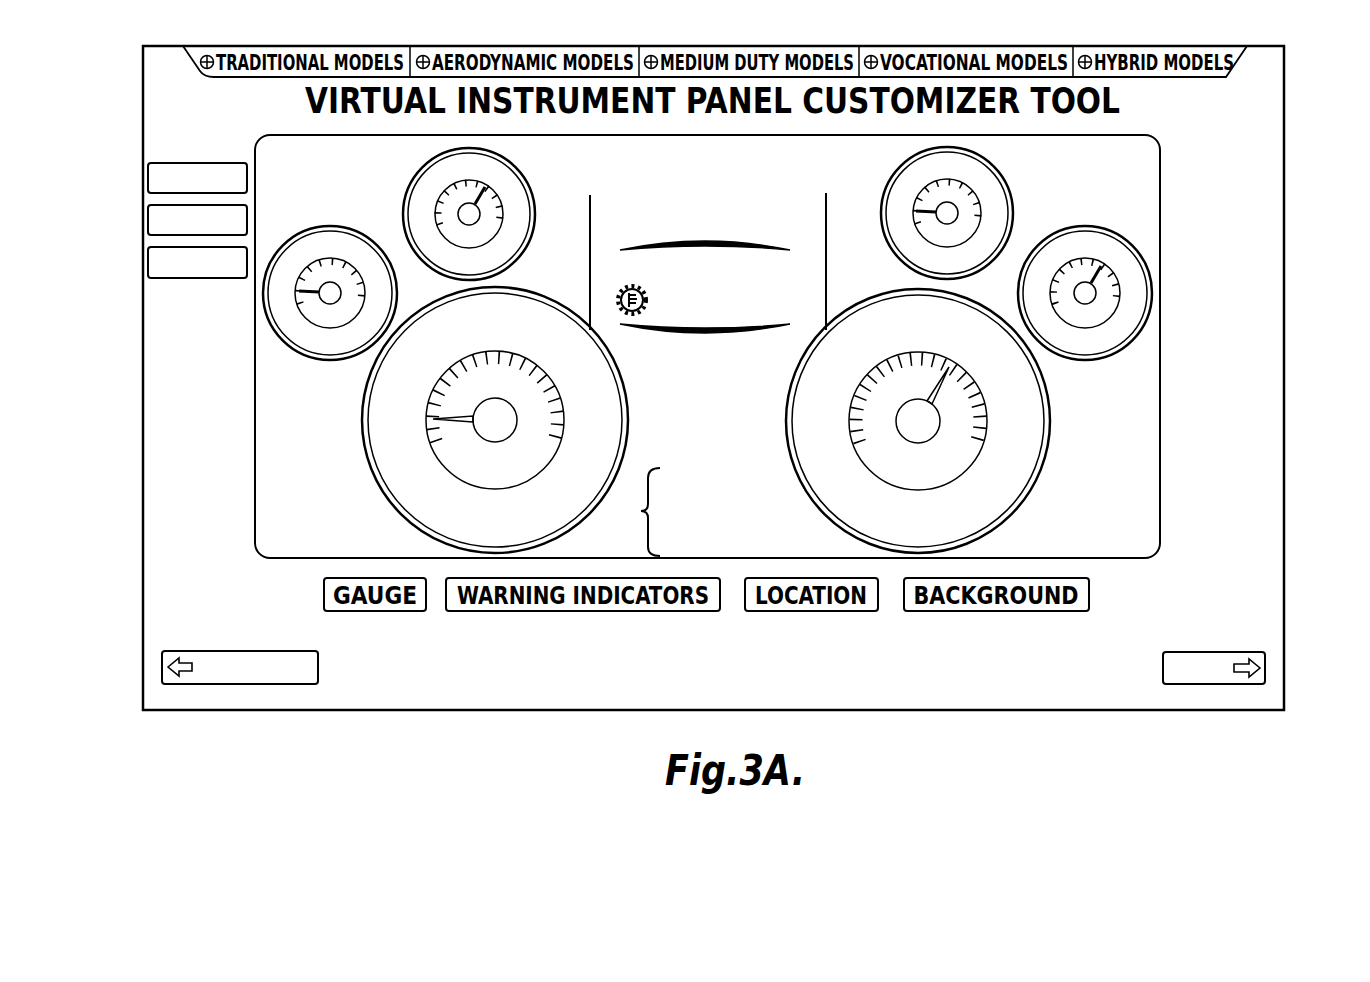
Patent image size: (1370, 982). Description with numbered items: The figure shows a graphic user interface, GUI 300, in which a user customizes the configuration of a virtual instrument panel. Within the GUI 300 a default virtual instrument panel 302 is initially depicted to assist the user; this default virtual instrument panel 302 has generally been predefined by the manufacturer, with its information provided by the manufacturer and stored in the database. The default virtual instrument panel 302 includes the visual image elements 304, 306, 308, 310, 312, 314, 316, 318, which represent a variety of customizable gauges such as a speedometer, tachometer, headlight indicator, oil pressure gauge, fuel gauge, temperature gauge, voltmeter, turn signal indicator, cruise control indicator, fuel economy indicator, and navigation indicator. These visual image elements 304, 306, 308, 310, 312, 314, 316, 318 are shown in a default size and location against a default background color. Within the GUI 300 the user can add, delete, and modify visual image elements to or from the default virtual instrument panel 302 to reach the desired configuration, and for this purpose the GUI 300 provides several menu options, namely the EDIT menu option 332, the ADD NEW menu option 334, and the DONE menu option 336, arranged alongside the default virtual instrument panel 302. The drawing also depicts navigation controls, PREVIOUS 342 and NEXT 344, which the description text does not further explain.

The GUI 300 is at (1284, 177).
The default virtual instrument panel 302 is at (1160, 348).
The visual image element 304 is at (368, 412).
The visual image element 306 is at (641, 511).
The visual image element 308 is at (826, 215).
The visual image element 310 is at (318, 228).
The visual image element 312 is at (404, 197).
The visual image element 314 is at (1010, 180).
The visual image element 316 is at (1100, 228).
The visual image element 318 is at (1049, 411).
The EDIT menu option 332 is at (148, 178).
The ADD NEW menu option 334 is at (148, 220).
The DONE menu option 336 is at (148, 262).
The previous button 342 is at (162, 667).
The next button 344 is at (1265, 667).